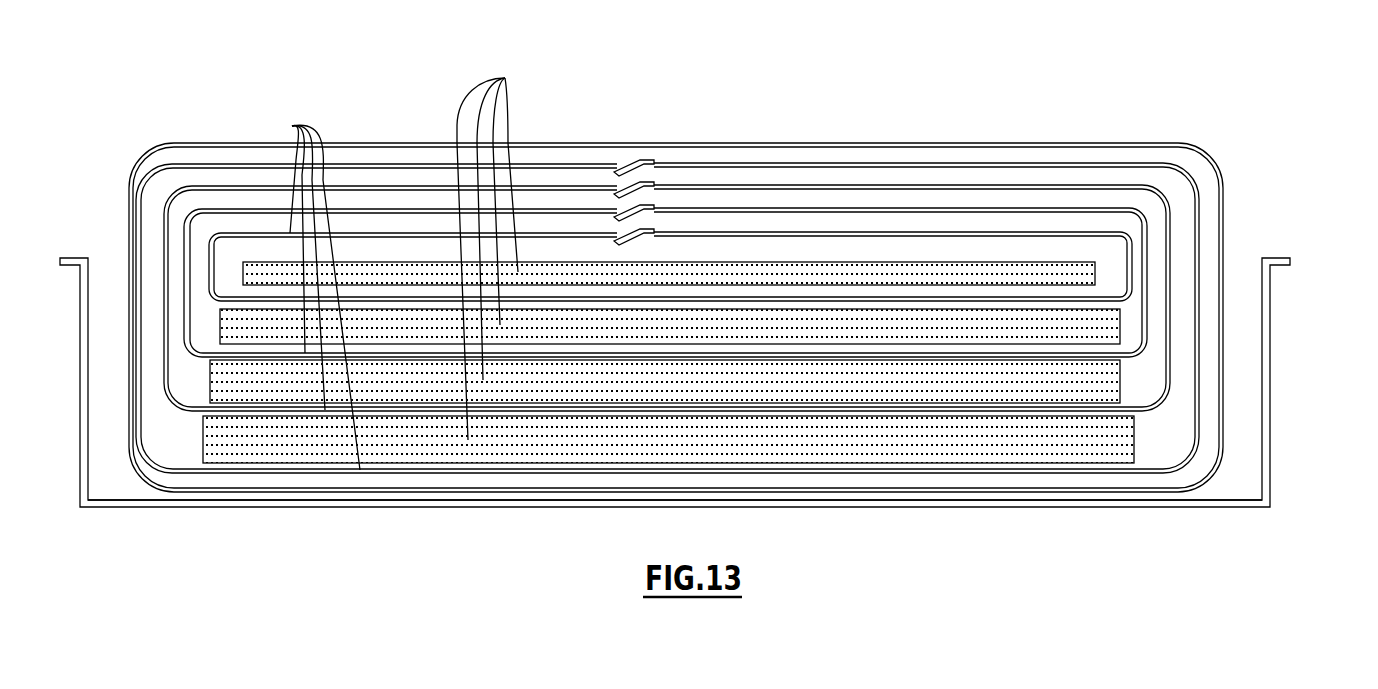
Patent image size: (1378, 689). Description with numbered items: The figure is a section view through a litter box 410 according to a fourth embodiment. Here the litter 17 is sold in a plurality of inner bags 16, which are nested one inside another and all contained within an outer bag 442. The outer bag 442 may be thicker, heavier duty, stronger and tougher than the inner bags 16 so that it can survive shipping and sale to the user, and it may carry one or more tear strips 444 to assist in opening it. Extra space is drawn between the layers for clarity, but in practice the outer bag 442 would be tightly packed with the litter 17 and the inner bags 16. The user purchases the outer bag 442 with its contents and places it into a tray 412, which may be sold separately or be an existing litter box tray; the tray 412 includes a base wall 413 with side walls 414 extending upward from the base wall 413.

The inner bags 16 is at (293, 126).
The litter 17 is at (497, 253).
The litter box 410 is at (723, 262).
The tray 412 is at (705, 412).
The base wall 413 is at (1163, 507).
The side walls 414 is at (1268, 355).
The outer bag 442 is at (1065, 143).
The tear strips 444 is at (206, 138).